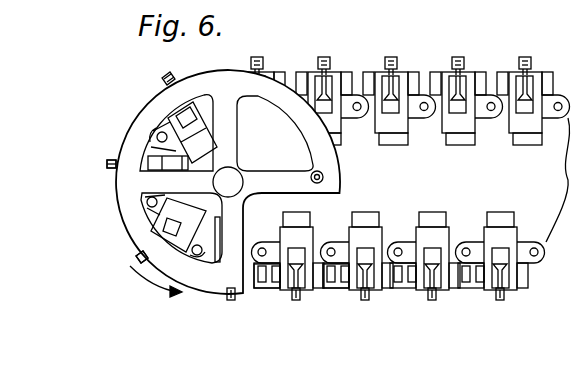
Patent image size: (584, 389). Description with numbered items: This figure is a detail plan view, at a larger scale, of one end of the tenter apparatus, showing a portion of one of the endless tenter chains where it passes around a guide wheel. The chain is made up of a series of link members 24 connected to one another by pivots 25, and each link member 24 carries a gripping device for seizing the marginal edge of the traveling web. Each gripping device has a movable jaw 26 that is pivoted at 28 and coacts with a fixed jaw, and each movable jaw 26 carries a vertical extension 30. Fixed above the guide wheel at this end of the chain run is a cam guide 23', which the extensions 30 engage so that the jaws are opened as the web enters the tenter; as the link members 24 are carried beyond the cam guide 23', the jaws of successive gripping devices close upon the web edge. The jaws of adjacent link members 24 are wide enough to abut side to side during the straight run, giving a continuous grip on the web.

The cam guide 23' is at (206, 183).
The link member 24 is at (351, 116).
The pivot 25 is at (367, 110).
The movable jaw 26 is at (328, 286).
The pivot of movable jaw 28 is at (374, 285).
The vertical extension 30 is at (109, 167).